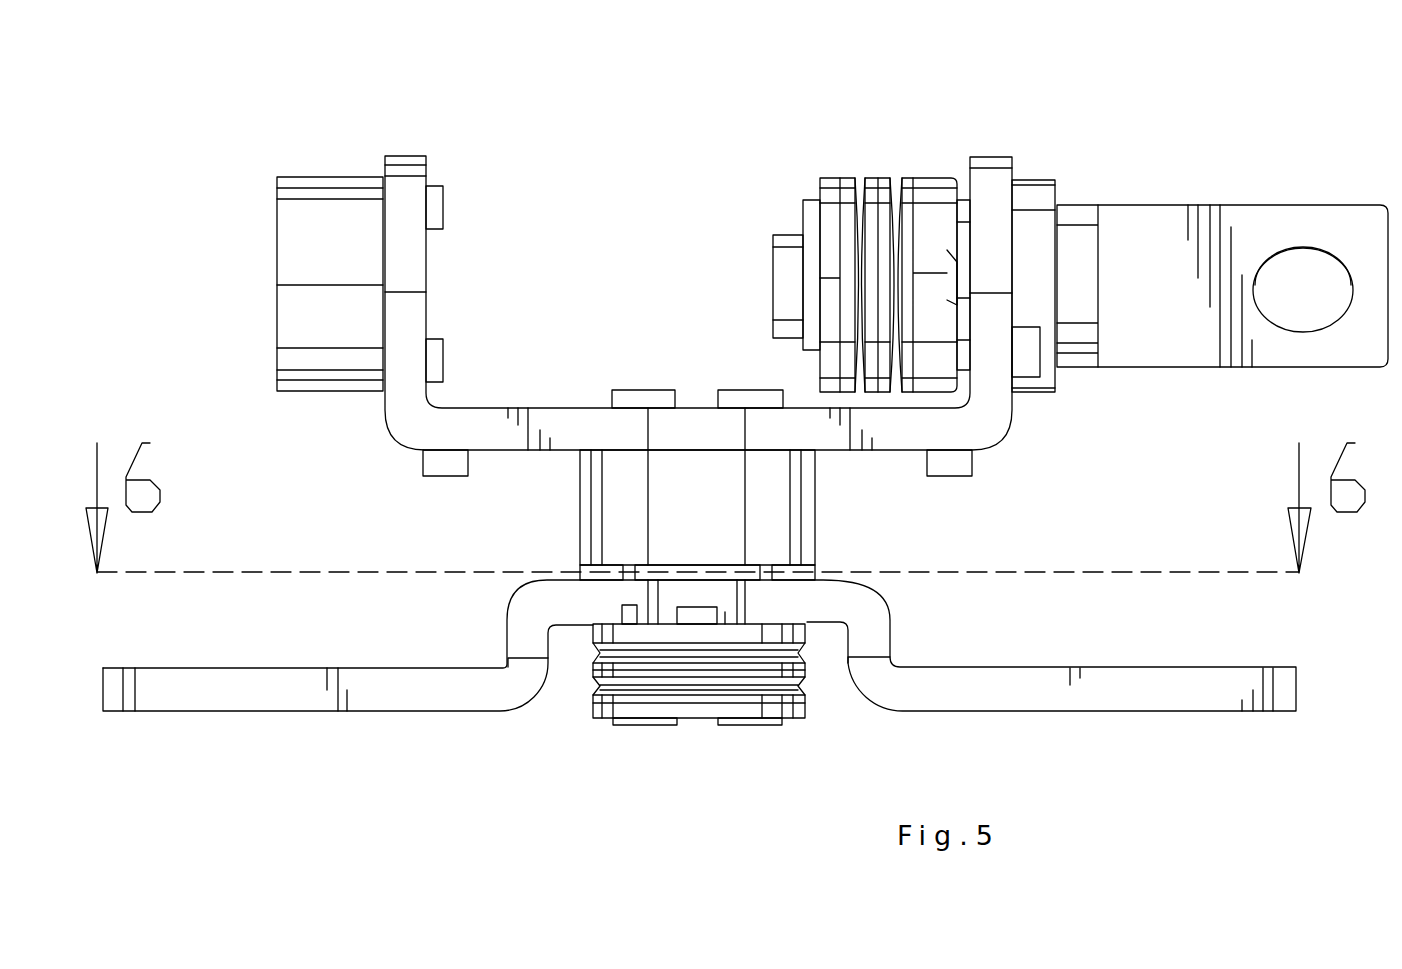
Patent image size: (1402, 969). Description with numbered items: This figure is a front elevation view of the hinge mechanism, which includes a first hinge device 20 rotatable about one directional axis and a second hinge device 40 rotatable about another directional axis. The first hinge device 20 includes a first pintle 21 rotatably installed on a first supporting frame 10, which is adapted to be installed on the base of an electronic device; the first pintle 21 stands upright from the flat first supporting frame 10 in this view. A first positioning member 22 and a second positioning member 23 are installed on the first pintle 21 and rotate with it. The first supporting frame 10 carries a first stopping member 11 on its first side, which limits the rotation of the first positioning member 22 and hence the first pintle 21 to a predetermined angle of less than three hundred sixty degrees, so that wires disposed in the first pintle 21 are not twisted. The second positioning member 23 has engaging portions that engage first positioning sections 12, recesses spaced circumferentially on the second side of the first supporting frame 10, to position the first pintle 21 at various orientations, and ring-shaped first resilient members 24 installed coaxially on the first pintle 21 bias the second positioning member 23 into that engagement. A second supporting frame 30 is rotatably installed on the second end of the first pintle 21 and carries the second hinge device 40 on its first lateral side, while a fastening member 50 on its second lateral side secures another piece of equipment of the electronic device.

The first supporting frame 10 is at (313, 700).
The first stopping member 11 is at (598, 566).
The first positioning sections 12 is at (695, 618).
The first hinge device 20 is at (290, 505).
The first pintle 21 is at (525, 505).
The first positioning member 22 is at (627, 708).
The second positioning member 23 is at (597, 633).
The first resilient members 24 is at (570, 702).
The second supporting frame 30 is at (550, 420).
The second hinge device 40 is at (1028, 106).
The fastening member 50 is at (280, 302).